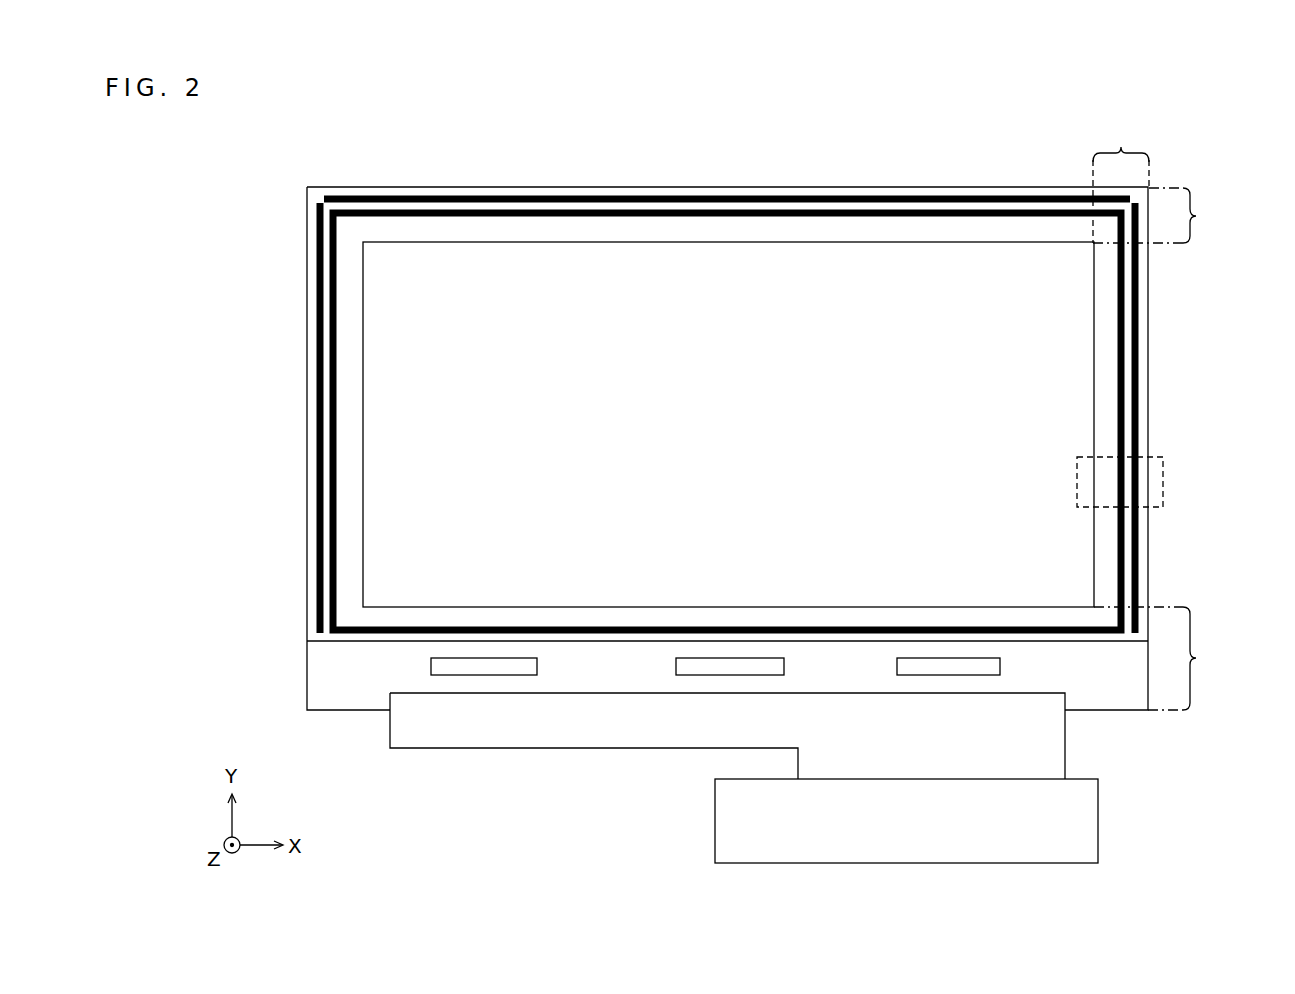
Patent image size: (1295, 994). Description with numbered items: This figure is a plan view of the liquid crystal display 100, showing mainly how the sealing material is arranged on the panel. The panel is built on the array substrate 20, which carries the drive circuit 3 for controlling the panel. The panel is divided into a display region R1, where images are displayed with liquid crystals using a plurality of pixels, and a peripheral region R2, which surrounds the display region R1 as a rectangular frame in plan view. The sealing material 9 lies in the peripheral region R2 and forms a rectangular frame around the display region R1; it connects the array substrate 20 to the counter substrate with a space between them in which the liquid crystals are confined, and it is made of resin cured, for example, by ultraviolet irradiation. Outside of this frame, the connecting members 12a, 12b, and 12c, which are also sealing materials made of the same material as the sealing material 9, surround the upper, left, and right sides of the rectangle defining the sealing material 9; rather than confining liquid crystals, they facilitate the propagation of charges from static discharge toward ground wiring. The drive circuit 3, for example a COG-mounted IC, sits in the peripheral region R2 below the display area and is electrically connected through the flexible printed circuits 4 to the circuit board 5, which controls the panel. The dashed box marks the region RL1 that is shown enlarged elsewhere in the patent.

The liquid crystal display 100 is at (1049, 162).
The array substrate 20 is at (1127, 698).
The connecting member 12a is at (317, 488).
The connecting member 12b is at (845, 197).
The connecting member 12c is at (1137, 482).
The sealing material 9 is at (1118, 485).
The display region R1 is at (947, 241).
The region RL1 is at (1160, 457).
The peripheral region R2 is at (1160, 417).
The drive circuit 3 is at (897, 658).
The flexible printed circuit 4 is at (1067, 748).
The circuit board 5 is at (1100, 818).